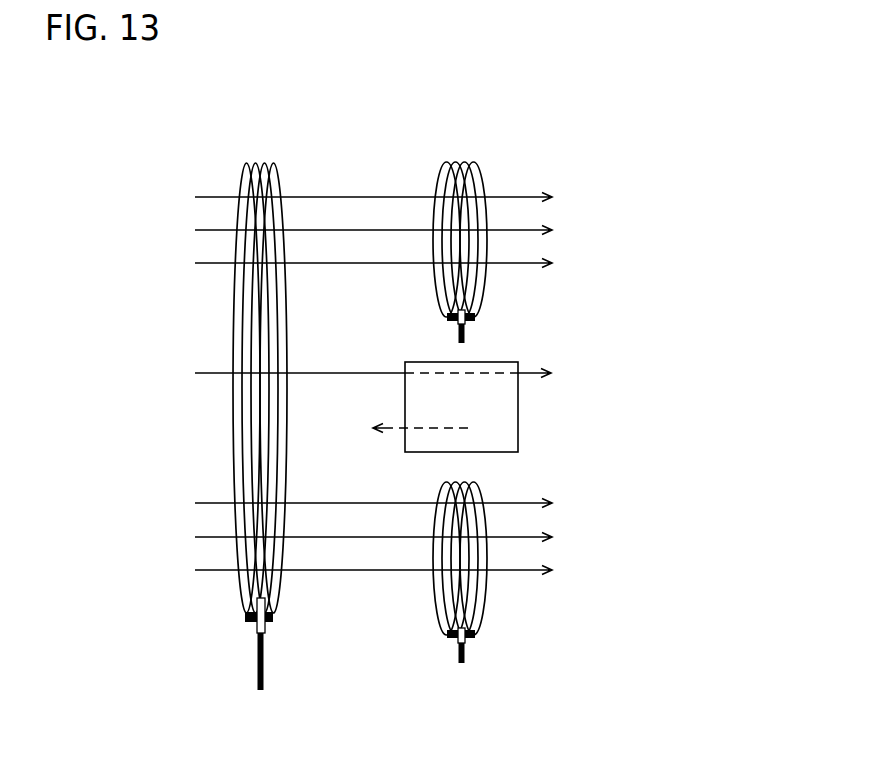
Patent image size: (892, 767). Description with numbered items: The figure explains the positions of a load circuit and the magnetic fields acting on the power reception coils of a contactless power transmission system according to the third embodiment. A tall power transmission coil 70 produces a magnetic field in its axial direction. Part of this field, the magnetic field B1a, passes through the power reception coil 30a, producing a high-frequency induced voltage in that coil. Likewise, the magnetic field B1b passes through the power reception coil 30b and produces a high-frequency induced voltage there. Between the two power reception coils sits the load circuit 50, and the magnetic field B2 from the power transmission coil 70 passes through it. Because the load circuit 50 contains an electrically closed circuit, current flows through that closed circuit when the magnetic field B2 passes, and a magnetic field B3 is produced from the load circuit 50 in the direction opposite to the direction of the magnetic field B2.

The power transmission coil 70 is at (258, 160).
The power reception coil 30a is at (462, 160).
The power reception coil 30b is at (441, 633).
The load circuit 50 is at (518, 446).
The magnetic field B1a is at (516, 195).
The magnetic field B1b is at (528, 574).
The magnetic field B2 is at (534, 378).
The magnetic field B3 is at (386, 432).